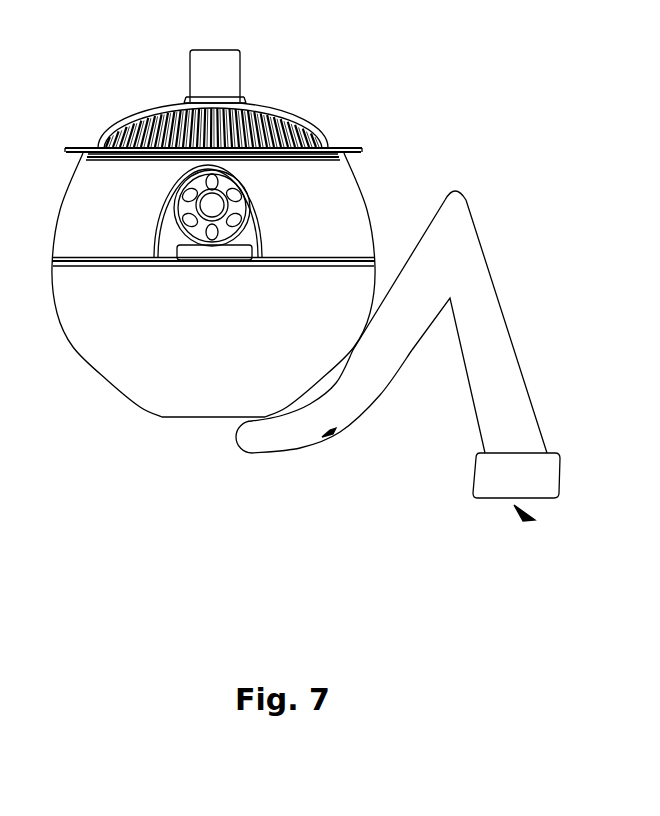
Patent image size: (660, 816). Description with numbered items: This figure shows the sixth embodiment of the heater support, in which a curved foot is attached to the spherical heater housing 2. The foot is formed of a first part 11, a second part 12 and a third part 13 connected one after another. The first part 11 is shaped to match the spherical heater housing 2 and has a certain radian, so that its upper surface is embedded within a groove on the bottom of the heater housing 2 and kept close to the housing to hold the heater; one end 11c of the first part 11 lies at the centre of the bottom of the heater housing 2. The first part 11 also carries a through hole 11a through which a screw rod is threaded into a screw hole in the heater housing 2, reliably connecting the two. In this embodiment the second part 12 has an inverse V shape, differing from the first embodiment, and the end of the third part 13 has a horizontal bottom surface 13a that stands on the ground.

The heater housing 2 is at (362, 232).
The first part 11 is at (300, 430).
The through hole 11a is at (329, 432).
The end of the first part 11c is at (240, 445).
The second part 12 is at (480, 262).
The third part 13 is at (550, 480).
The horizontal bottom surface 13a is at (520, 512).